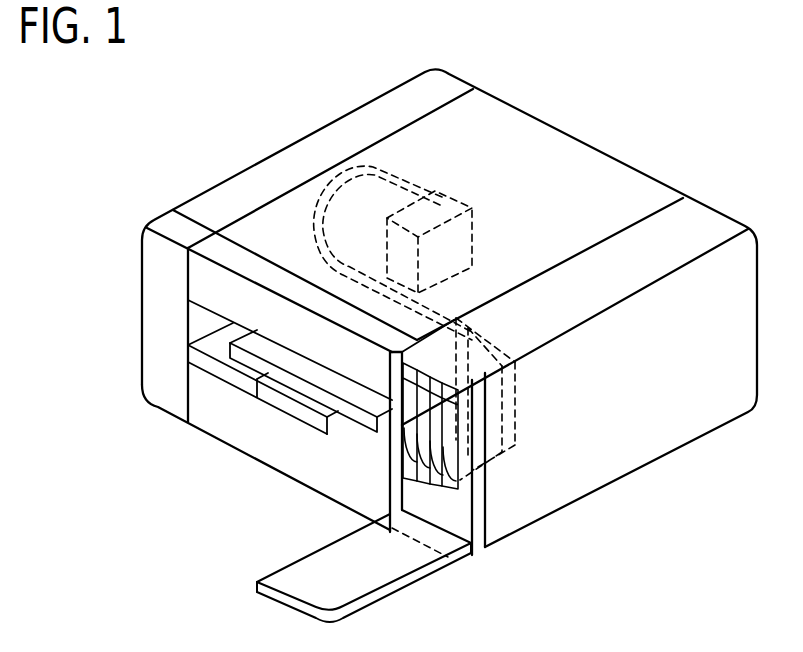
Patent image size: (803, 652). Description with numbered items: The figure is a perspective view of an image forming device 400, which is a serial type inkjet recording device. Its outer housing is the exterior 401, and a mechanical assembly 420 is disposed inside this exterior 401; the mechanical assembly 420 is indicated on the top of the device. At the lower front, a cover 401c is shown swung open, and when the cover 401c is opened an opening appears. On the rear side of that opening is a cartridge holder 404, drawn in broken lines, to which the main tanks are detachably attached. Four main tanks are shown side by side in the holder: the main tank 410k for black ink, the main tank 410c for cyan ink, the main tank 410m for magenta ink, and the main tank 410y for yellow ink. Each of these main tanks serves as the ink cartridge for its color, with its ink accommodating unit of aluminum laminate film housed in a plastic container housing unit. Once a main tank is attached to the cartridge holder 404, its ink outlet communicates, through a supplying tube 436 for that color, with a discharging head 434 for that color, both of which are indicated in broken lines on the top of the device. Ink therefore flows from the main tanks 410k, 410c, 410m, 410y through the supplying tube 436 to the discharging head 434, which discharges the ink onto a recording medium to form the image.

The image forming device 400 is at (677, 97).
The exterior 401 is at (256, 163).
The cover 401c is at (393, 591).
The mechanical assembly 420 is at (531, 201).
The discharging head 434 is at (452, 191).
The supplying tube 436 is at (353, 172).
The cartridge holder 404 is at (516, 414).
The main tank 410k is at (416, 439).
The main tank 410c is at (420, 449).
The main tank 410m is at (418, 461).
The main tank 410y is at (418, 470).